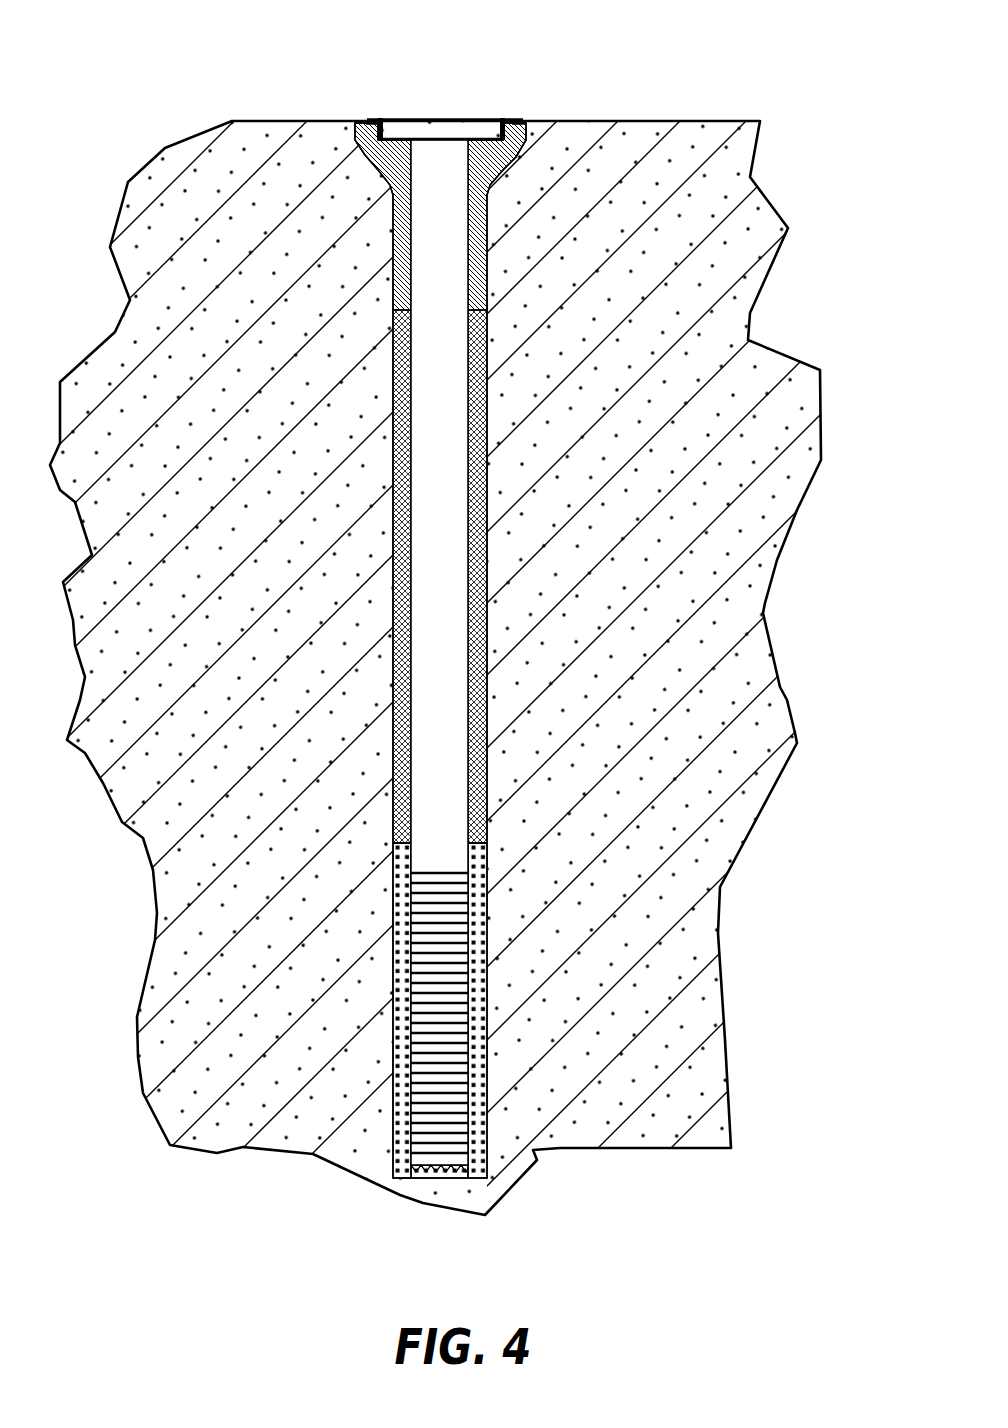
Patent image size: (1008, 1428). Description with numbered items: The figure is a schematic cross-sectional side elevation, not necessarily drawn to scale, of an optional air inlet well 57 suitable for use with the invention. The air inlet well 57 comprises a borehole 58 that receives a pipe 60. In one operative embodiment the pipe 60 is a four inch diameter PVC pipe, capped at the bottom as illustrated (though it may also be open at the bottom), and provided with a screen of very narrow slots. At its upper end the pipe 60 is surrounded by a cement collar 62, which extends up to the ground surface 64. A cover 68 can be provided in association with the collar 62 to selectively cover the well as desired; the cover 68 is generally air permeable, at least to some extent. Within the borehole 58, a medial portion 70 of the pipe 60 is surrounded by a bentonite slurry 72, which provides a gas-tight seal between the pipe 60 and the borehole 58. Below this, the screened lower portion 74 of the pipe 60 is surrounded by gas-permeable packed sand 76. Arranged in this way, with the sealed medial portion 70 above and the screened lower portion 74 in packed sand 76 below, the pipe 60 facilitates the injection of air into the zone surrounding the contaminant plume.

The air inlet well 57 is at (530, 613).
The borehole 58 is at (487, 1065).
The pipe 60 is at (468, 853).
The cement collar 62 is at (393, 237).
The ground surface 64 is at (258, 120).
The cover 68 is at (452, 118).
The medial portion 70 is at (440, 468).
The bentonite slurry 72 is at (483, 697).
The screened lower portion 74 is at (430, 1062).
The packed sand 76 is at (477, 932).